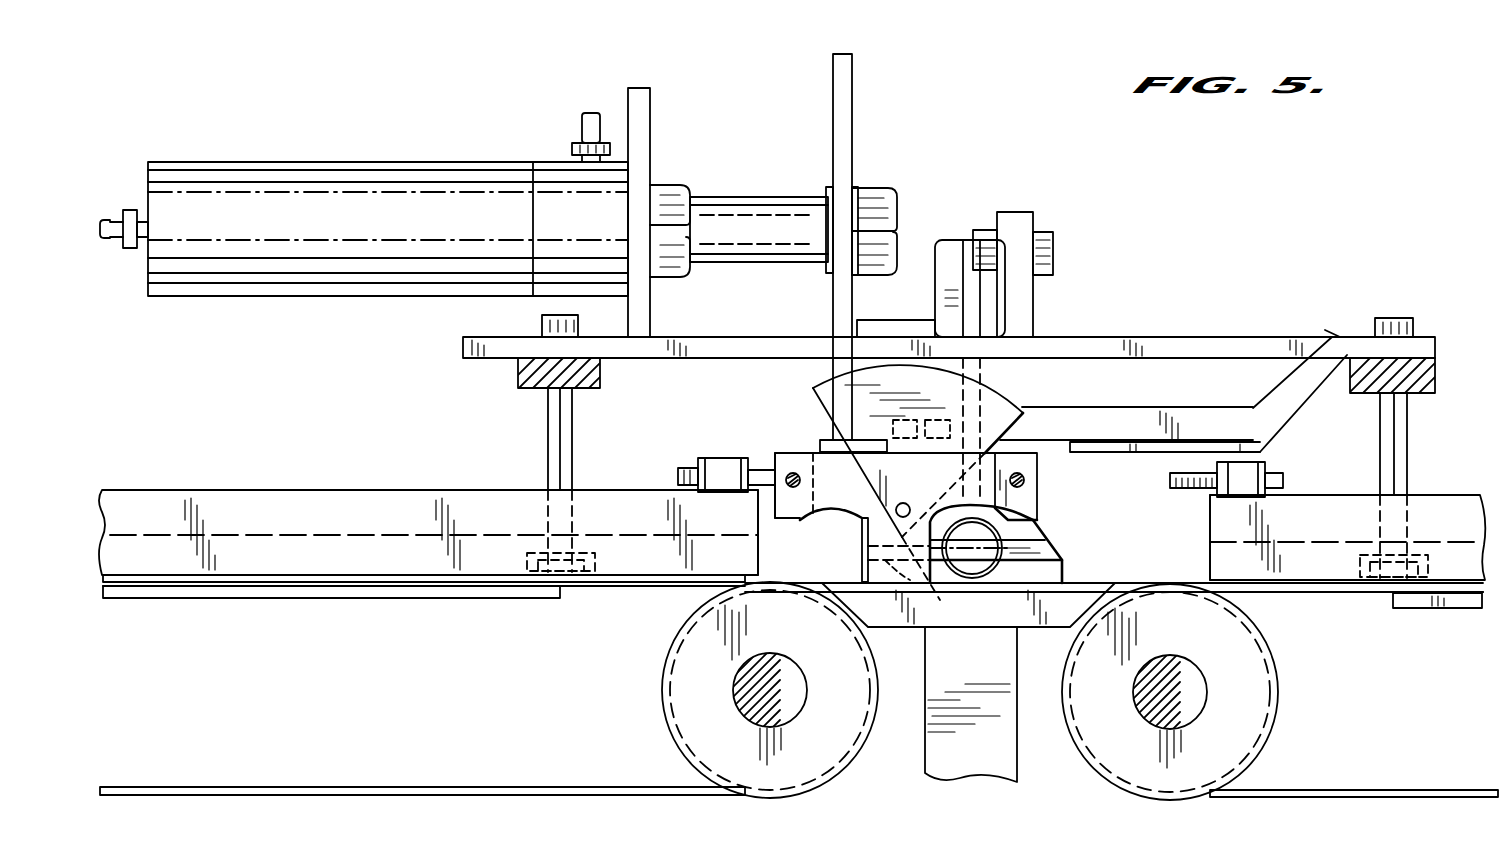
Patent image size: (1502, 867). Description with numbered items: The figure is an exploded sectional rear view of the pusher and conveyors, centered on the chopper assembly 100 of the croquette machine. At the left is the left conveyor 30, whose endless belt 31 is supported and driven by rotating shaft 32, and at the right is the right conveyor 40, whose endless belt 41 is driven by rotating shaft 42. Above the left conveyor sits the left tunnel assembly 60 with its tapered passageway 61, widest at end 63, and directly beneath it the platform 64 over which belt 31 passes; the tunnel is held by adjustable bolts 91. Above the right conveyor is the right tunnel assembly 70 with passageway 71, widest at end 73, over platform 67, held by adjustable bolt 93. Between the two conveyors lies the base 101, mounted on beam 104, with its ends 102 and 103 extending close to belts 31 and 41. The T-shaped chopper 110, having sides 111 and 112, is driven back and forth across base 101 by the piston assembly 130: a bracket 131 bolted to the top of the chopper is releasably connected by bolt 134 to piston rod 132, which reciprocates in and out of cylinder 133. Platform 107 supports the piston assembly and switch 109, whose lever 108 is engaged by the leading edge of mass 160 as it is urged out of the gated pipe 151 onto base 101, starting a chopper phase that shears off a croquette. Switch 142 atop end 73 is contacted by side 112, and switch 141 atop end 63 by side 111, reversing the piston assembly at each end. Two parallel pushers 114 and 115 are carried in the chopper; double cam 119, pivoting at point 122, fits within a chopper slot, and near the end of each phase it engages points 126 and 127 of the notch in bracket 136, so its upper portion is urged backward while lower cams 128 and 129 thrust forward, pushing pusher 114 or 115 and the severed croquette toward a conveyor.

The left conveyor 30 is at (1322, 638).
The endless belt 31 is at (1350, 790).
The rotating shaft 32 is at (1205, 676).
The right conveyor 40 is at (566, 634).
The endless belt 41 is at (466, 768).
The rotating shaft 42 is at (745, 670).
The left tunnel assembly 60 is at (1460, 478).
The elongated passageway 61 is at (1464, 570).
The end 63 is at (1210, 560).
The platform 64 is at (1424, 610).
The platform 67 is at (398, 604).
The right tunnel assembly 70 is at (446, 486).
The passageway 71 is at (294, 578).
The end 73 is at (758, 530).
The bolts 91 is at (1410, 432).
The bolt 93 is at (548, 432).
The chopper assembly 100 is at (1052, 322).
The base 101 is at (1063, 580).
The end 102 is at (820, 582).
The end 103 is at (1098, 597).
The beam 104 is at (986, 685).
The platform 107 is at (1194, 338).
The lever 108 is at (1030, 360).
The switch 109 is at (946, 240).
The chopper 110 is at (1038, 473).
The side 111 is at (1033, 503).
The side 112 is at (764, 460).
The pusher 114 is at (959, 582).
The pusher 115 is at (862, 532).
The double cam 119 is at (984, 402).
The pivot point 122 is at (904, 504).
The notch point 126 is at (823, 442).
The notch point 127 is at (1072, 446).
The lower cam 128 is at (862, 572).
The lower cam 129 is at (928, 586).
The piston assembly 130 is at (536, 132).
The bracket 131 is at (852, 130).
The piston rod 132 is at (768, 200).
The cylinder 133 is at (446, 140).
The bolt 134 is at (896, 216).
The bracket 136 is at (1336, 336).
The switch 141 is at (1266, 464).
The switch 142 is at (712, 458).
The gated pipe 151 is at (1008, 540).
The mass 160 is at (987, 574).